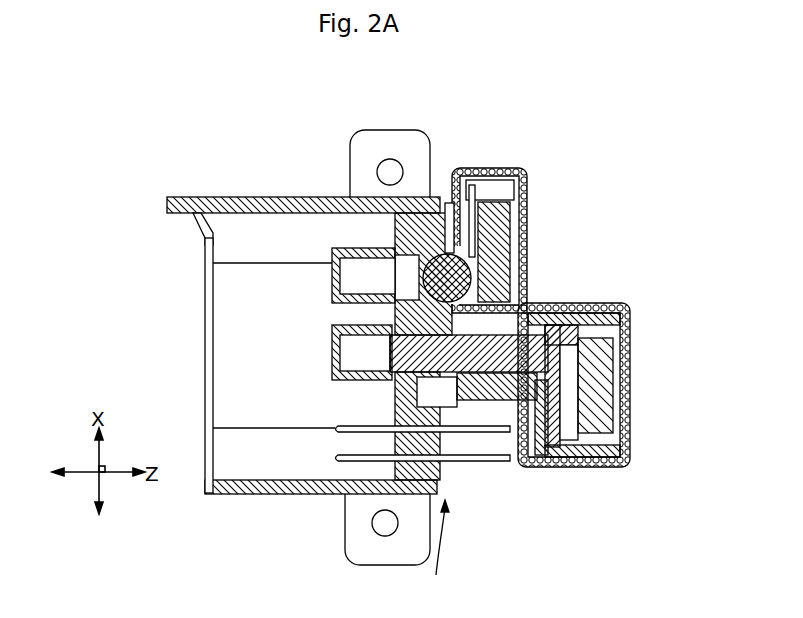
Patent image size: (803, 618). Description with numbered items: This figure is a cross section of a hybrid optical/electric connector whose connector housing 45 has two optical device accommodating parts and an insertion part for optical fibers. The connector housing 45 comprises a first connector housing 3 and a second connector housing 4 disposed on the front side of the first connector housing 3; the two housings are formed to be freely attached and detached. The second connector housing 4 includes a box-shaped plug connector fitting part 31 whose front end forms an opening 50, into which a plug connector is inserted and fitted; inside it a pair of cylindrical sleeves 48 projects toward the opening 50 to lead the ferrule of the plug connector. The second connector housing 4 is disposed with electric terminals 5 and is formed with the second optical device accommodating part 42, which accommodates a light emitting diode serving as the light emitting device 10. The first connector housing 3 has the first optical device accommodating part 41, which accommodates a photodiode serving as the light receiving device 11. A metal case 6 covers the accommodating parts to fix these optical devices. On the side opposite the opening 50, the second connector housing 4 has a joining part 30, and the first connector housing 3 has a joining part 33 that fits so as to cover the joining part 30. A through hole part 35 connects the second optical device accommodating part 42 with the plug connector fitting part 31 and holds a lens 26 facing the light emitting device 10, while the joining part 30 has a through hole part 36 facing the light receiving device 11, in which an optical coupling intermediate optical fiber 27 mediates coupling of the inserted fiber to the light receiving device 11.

The first connector housing 3 is at (601, 384).
The second connector housing 4 is at (322, 486).
The electric terminals 5 is at (500, 405).
The metal case 6 is at (524, 238).
The light emitting device 10 is at (522, 215).
The light receiving device 11 is at (615, 405).
The lens 26 is at (452, 200).
The optical coupling intermediate optical fiber 27 is at (466, 380).
The joining part 30 is at (555, 302).
The plug connector fitting part 31 is at (240, 481).
The joining part 33 is at (505, 403).
The through hole part 35 is at (472, 188).
The through hole part 36 is at (530, 302).
The first optical device accommodating part 41 is at (630, 363).
The second optical device accommodating part 42 is at (512, 190).
The connector housing 45 is at (434, 550).
The cylindrical sleeves 48 is at (345, 250).
The opening 50 is at (205, 470).